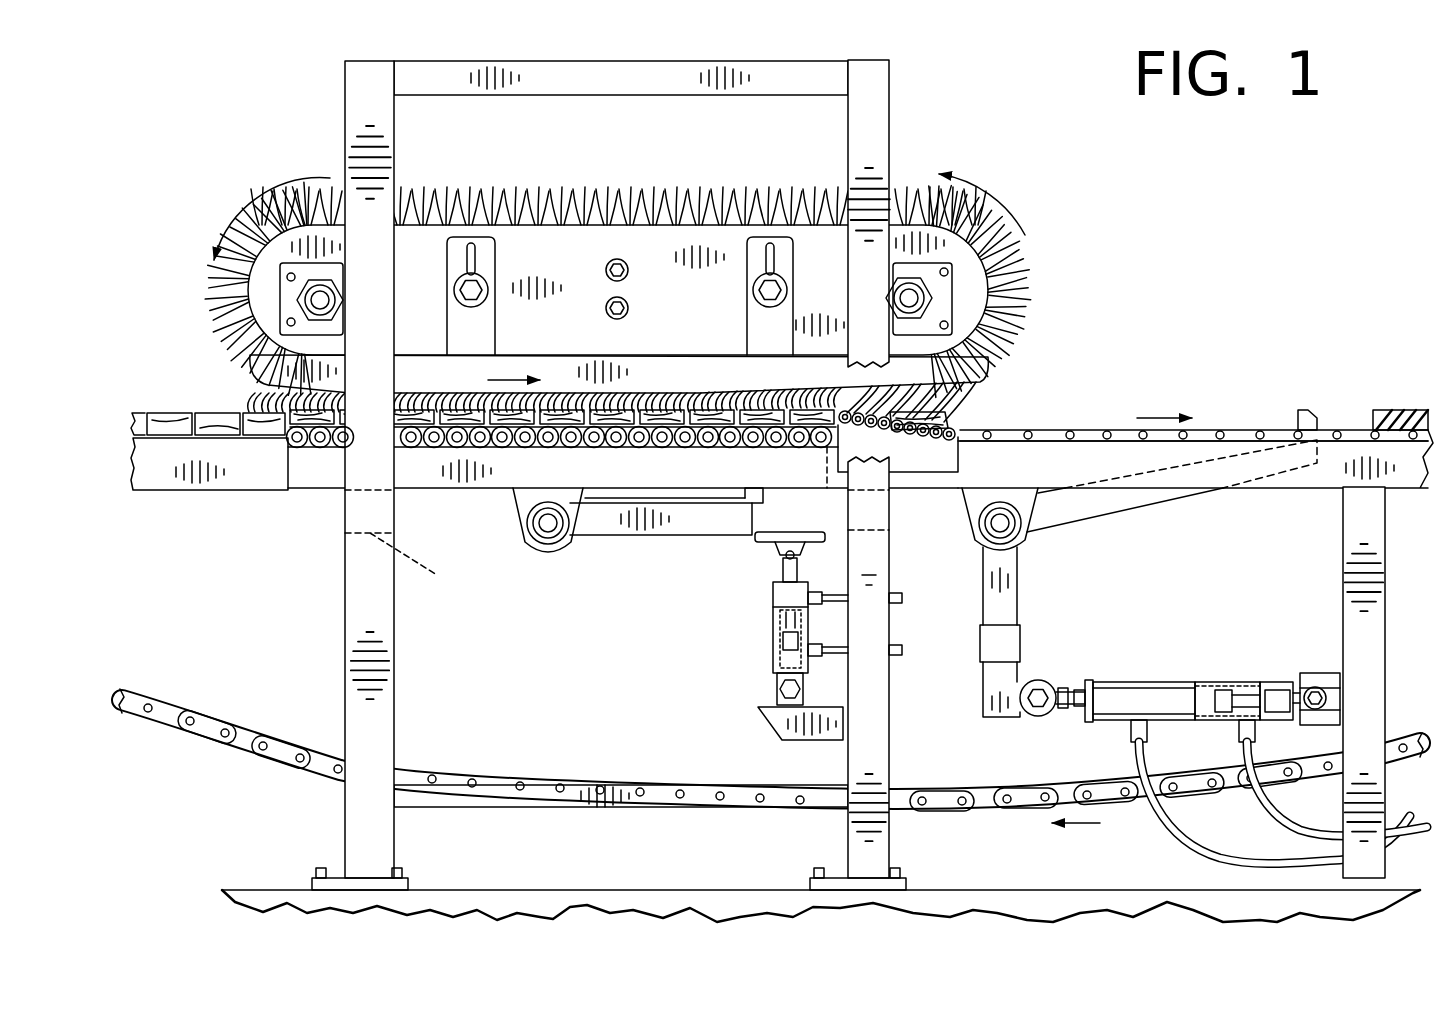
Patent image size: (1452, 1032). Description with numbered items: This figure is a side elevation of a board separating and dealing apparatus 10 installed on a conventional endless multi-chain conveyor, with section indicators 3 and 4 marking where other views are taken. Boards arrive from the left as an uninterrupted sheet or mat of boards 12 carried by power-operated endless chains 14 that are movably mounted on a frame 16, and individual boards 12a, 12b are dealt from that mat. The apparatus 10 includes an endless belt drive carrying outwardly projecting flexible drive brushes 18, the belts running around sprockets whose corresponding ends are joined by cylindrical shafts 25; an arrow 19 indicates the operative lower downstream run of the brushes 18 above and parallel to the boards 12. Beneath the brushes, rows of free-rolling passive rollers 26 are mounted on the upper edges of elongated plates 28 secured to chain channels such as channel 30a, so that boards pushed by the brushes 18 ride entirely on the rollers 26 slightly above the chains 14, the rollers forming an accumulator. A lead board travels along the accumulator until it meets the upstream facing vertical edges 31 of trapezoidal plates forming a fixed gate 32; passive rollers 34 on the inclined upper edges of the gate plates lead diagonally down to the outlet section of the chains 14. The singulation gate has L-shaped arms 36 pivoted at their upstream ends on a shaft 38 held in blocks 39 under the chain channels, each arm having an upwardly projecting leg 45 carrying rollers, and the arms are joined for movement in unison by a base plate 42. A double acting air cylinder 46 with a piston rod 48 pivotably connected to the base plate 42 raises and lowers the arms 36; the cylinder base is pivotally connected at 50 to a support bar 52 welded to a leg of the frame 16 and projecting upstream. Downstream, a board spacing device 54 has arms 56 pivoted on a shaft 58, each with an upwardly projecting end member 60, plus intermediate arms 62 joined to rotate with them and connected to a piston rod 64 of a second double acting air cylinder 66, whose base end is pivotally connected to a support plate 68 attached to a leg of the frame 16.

The board separating and dealing apparatus 10 is at (1014, 307).
The sheet or mat of boards 12 is at (703, 355).
The individual board 12a is at (1400, 410).
The individual board 12b is at (986, 424).
The endless chains 14 is at (773, 582).
The frame 16 is at (875, 475).
The flexible drive brushes 18 is at (594, 158).
The arrow indicating lower downstream run 19 is at (515, 376).
The shafts 25 is at (616, 291).
The passive rollers 26 is at (405, 450).
The elongated plates 28 is at (288, 466).
The chain channel 30a is at (1402, 480).
The upstream facing vertical edges 31 is at (812, 446).
The fixed gate 32 is at (970, 457).
The rollers 34 is at (904, 420).
The arms 36 is at (709, 533).
The shaft 38 is at (562, 537).
The blocks 39 is at (520, 500).
The base plate 42 is at (826, 539).
The upwardly projecting leg 45 is at (742, 490).
The double acting air cylinder 46 is at (775, 606).
The piston rod 48 is at (796, 573).
The pivotal connection 50 is at (777, 690).
The support bar 52 is at (790, 727).
The board spacing device 54 is at (1192, 516).
The arms 56 is at (1088, 504).
The shaft 58 is at (1025, 537).
The upwardly projecting end member 60 is at (1300, 428).
The intermediate arms 62 is at (1010, 612).
The piston rod 64 is at (1076, 707).
The second double acting air cylinder 66 is at (1163, 690).
The support plate 68 is at (1318, 674).
The section line 3- 3 is at (746, 469).
The section line 4- 4 is at (930, 455).